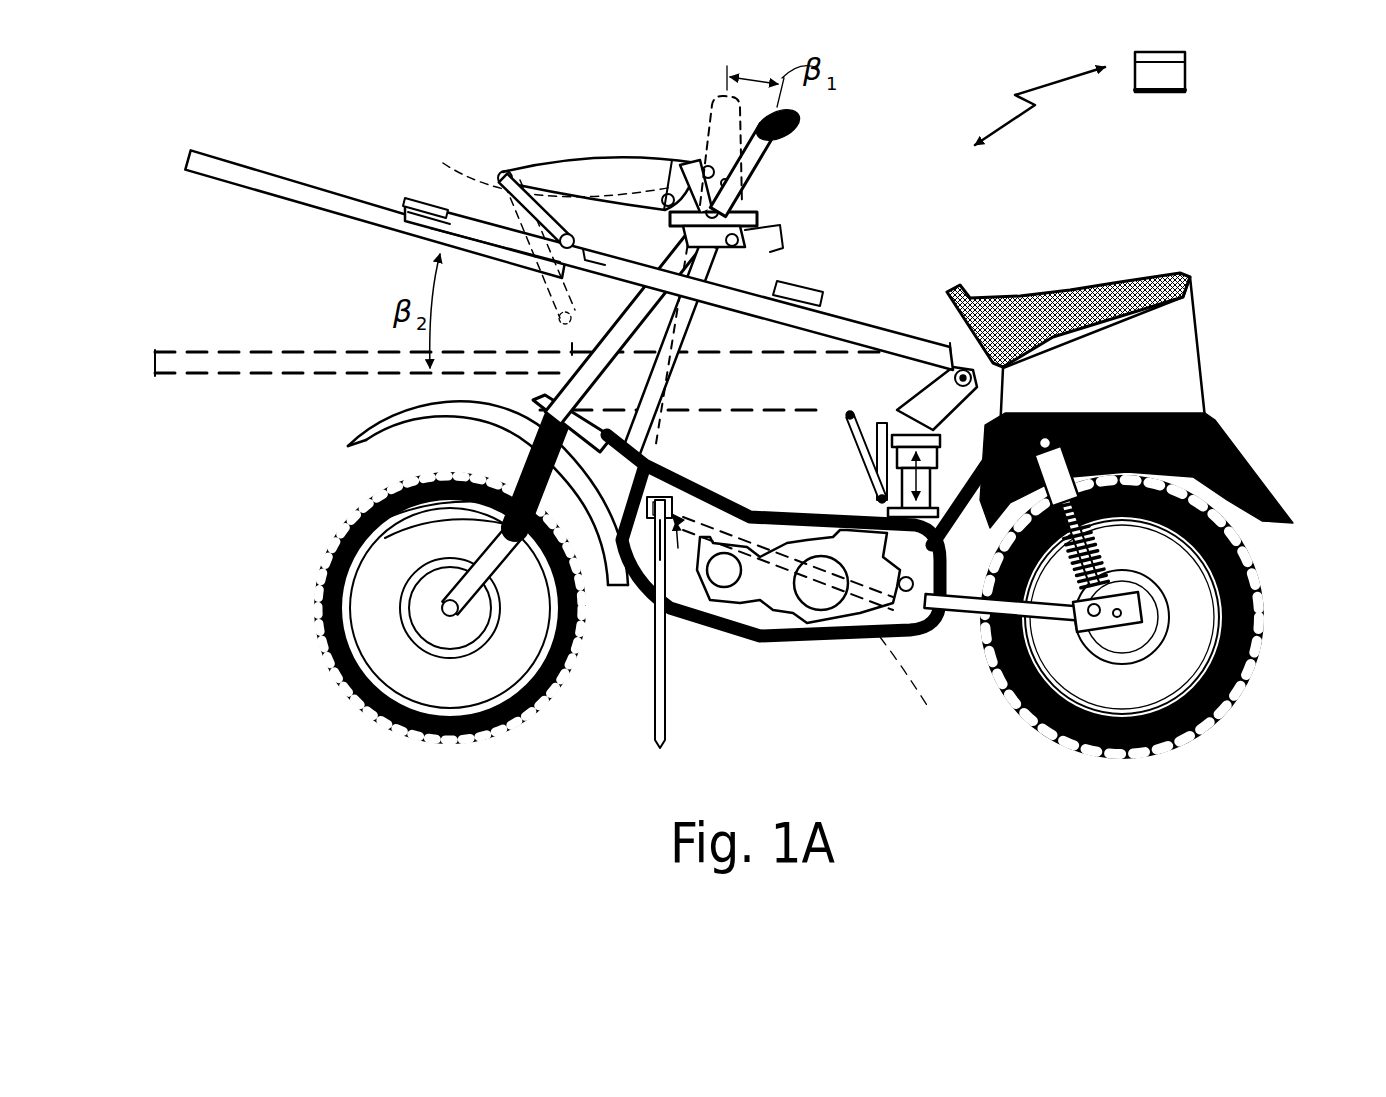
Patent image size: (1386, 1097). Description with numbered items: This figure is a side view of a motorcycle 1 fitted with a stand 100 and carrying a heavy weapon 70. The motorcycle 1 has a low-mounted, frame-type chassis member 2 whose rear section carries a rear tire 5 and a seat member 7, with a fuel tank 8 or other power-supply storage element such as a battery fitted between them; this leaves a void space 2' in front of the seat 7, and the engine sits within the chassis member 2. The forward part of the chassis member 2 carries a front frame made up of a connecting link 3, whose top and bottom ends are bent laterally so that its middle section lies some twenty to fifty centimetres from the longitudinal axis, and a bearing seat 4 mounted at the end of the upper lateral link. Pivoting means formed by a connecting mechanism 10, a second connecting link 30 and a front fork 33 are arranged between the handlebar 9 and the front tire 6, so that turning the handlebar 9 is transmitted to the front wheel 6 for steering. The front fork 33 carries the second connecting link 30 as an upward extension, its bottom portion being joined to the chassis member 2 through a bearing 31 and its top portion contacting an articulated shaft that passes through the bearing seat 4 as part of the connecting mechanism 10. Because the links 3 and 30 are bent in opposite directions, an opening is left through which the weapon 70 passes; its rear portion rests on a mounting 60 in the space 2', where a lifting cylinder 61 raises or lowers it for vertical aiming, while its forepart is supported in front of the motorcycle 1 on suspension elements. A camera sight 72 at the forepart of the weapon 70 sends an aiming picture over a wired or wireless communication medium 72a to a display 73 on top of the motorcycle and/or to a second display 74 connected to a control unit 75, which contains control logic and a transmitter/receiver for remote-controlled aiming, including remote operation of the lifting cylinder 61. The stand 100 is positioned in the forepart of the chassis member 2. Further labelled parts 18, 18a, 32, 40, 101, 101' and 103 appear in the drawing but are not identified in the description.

The motorcycle 1 is at (1022, 232).
The chassis member 2 is at (805, 571).
The void space 2' is at (782, 522).
The connecting link 3 is at (663, 427).
The bearing seat 4 is at (650, 285).
The rear tire 5 is at (1257, 572).
The front tire 6 is at (327, 550).
The seat member 7 is at (1127, 282).
The fuel tank 8 is at (1193, 347).
The handlebar 9 is at (787, 101).
The connecting mechanism 10 is at (770, 180).
The steering head bracket 18 is at (757, 198).
The handlebar alternate position 18a is at (700, 200).
The second connecting link 30 is at (583, 373).
The bearing 31 is at (567, 463).
The support rail 32 is at (610, 275).
The front fork 33 is at (473, 540).
The cowl 40 is at (535, 160).
The mounting 60 is at (904, 384).
The lifting cylinder 61 is at (963, 437).
The weapon 70 is at (310, 183).
The camera sight 72 is at (418, 198).
The communication medium 72a is at (688, 317).
The display 73 is at (797, 287).
The second display 74 is at (1183, 44).
The control unit 75 is at (1177, 78).
The stand 100 is at (673, 610).
The stand leg 101 is at (719, 629).
The stand leg alternate position 101' is at (933, 690).
The stand bracket 103 is at (710, 627).